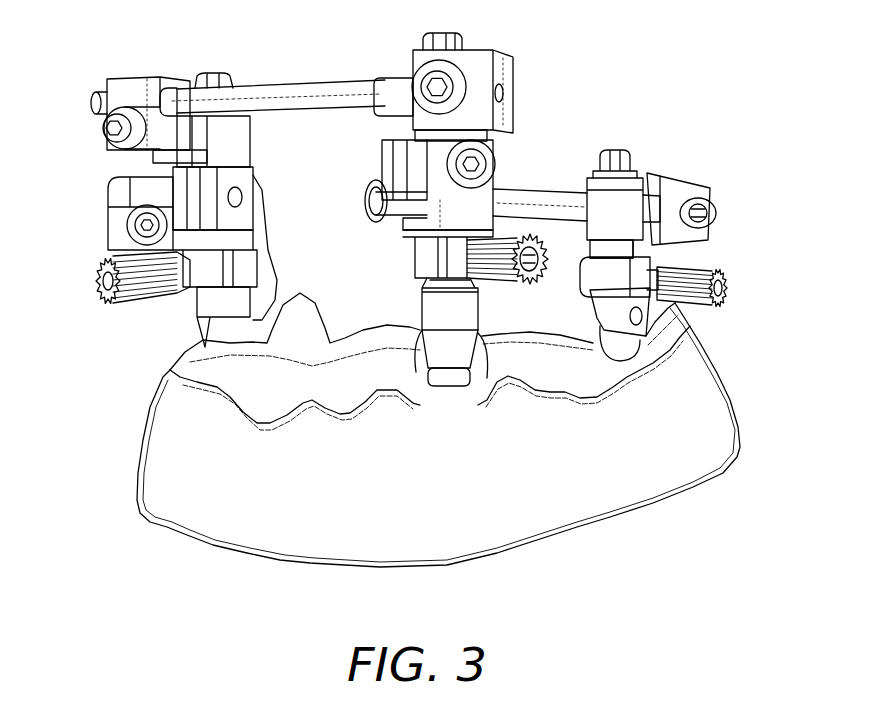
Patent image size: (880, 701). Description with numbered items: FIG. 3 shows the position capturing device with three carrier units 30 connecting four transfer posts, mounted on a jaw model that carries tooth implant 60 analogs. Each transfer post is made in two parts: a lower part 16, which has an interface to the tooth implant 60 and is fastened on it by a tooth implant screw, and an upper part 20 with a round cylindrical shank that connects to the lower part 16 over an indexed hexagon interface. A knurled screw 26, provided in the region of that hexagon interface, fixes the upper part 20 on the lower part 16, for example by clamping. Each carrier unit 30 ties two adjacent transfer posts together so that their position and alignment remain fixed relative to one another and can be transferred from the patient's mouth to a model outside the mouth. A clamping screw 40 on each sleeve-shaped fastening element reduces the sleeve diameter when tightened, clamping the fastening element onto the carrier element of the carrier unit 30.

The lower part 16 is at (197, 321).
The upper part 20 is at (425, 255).
The knurled screw 26 is at (96, 272).
The carrier unit 30 is at (310, 79).
The clamping screw 40 is at (104, 129).
The tooth implant 60 is at (448, 385).